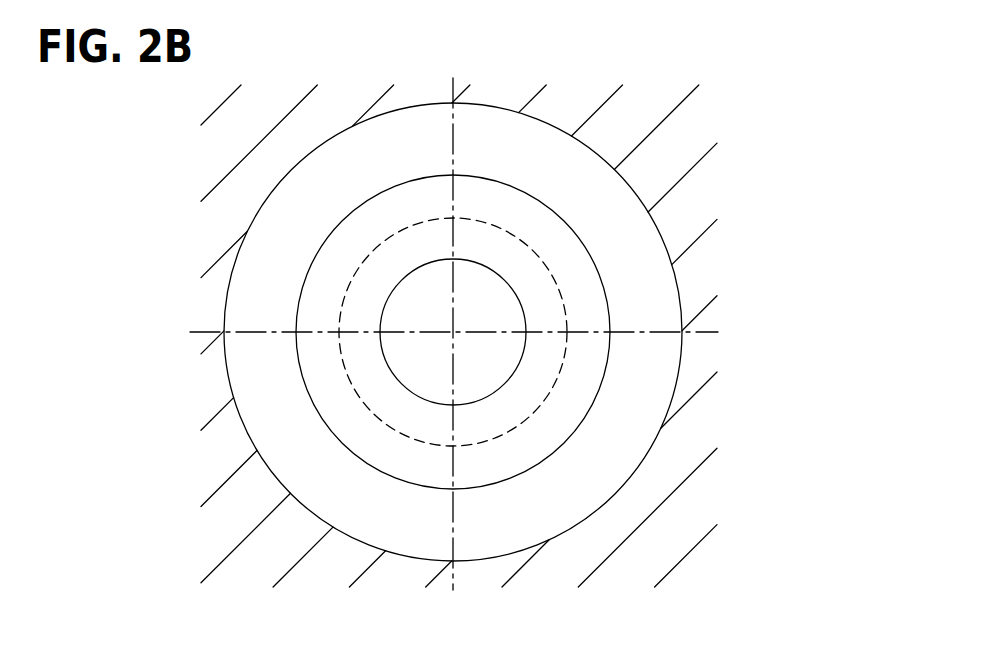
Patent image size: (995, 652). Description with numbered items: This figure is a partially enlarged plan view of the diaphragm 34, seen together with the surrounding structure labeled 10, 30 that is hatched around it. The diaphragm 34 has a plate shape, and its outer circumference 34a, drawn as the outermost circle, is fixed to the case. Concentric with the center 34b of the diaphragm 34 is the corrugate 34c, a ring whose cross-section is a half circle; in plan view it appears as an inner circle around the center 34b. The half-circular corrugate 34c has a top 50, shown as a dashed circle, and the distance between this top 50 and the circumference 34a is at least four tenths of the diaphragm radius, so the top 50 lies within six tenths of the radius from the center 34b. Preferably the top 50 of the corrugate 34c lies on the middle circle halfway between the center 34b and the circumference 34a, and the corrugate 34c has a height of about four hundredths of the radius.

The pressure sensor 10 is at (463, 312).
The housing 30 is at (665, 152).
The diaphragm 34 is at (507, 299).
The circumference 34a is at (682, 290).
The center 34b is at (457, 333).
The corrugate 34c is at (565, 270).
The top 50 is at (522, 422).